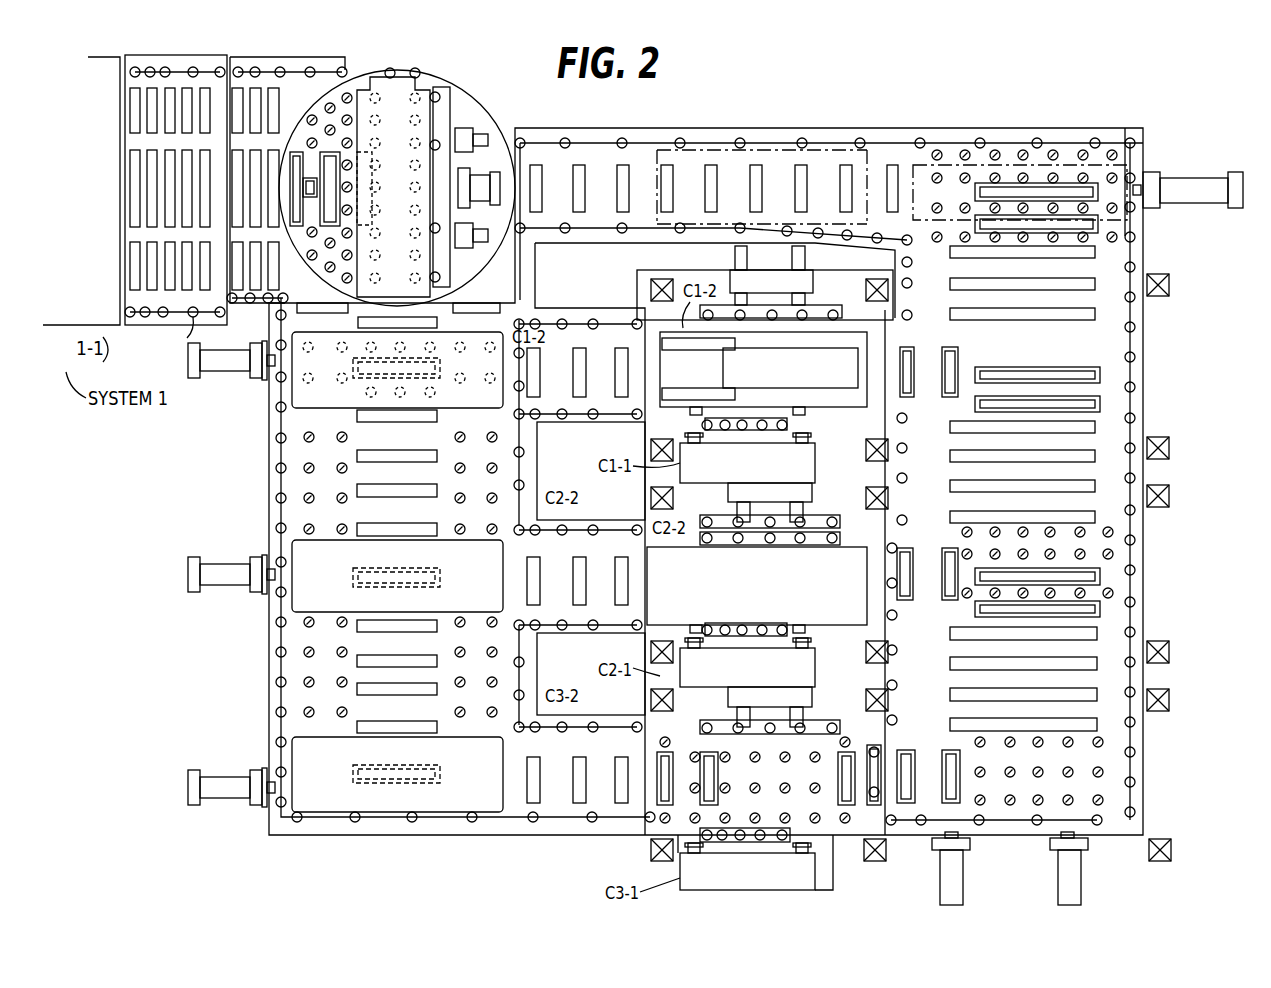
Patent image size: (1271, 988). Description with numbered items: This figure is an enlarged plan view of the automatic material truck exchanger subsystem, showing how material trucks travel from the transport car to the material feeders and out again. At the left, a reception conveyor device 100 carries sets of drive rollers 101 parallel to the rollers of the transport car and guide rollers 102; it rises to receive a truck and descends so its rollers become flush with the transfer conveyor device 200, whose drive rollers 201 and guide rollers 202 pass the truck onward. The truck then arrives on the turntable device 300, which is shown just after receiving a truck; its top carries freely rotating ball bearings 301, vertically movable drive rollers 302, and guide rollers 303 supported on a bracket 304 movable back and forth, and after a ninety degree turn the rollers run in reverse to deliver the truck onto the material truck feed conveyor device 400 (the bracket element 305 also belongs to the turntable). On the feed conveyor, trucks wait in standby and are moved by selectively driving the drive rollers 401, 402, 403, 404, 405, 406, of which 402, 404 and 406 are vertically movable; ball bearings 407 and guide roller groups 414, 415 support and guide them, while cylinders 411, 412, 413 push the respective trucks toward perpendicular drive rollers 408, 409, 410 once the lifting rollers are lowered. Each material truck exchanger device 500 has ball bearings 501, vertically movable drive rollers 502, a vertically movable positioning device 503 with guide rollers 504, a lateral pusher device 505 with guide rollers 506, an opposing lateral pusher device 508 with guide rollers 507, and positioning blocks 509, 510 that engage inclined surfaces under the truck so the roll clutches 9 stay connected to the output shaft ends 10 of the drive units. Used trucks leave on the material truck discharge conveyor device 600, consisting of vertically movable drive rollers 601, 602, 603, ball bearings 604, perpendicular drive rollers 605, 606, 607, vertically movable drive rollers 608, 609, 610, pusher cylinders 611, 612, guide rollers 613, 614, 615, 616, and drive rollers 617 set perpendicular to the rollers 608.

The reception conveyor device 100 is at (137, 328).
The drive rollers 101 is at (130, 165).
The guide rollers 102 is at (171, 337).
The transfer conveyor device 200 is at (330, 76).
The drive rollers 201 is at (290, 190).
The guide rollers 202 is at (258, 302).
The turntable device 300 is at (478, 97).
The ball bearings 301 is at (330, 255).
The drive rollers 302 is at (323, 192).
The guide rollers 303 is at (460, 128).
The bracket 304 is at (466, 168).
The connector 305 is at (488, 236).
The material truck feed conveyor device 400 is at (290, 517).
The drive rollers 401 is at (418, 307).
The drive rollers 402 is at (440, 365).
The drive rollers 403 is at (378, 418).
The drive rollers 404 is at (420, 568).
The drive rollers 405 is at (410, 723).
The drive rollers 406 is at (420, 768).
The ball bearings 407 is at (288, 436).
The drive rollers 408 is at (549, 372).
The drive rollers 409 is at (549, 581).
The drive rollers 410 is at (540, 790).
The cylinder 411 is at (215, 378).
The cylinder 412 is at (225, 592).
The cylinder 413 is at (238, 805).
The guide roller group 414 is at (275, 622).
The guide roller group 415 is at (593, 625).
The material truck exchanger device 500 is at (680, 723).
The ball bearings 501 is at (787, 790).
The drive rollers 502 is at (705, 780).
The positioning device 503 is at (883, 833).
The guide rollers 504 is at (876, 752).
The lateral pusher device 505 is at (772, 842).
The guide rollers 506 is at (742, 876).
The guide rollers 507 is at (740, 720).
The lateral pusher device 508 is at (820, 722).
The positioning block 509 is at (652, 830).
The positioning block 510 is at (850, 838).
The material truck discharge conveyor device 600 is at (1117, 465).
The drive rollers 601 is at (977, 345).
The drive rollers 602 is at (895, 552).
The drive rollers 603 is at (917, 773).
The ball bearings 604 is at (940, 241).
The drive rollers 605 is at (1098, 284).
The drive rollers 606 is at (1097, 458).
The drive rollers 607 is at (967, 723).
The drive rollers 608 is at (1063, 182).
The drive rollers 609 is at (1033, 397).
The drive rollers 610 is at (1098, 578).
The pusher cylinder 611 is at (963, 890).
The pusher cylinder 612 is at (1178, 178).
The guide rollers 613 is at (895, 628).
The guide rollers 614 is at (1150, 270).
The guide rollers 615 is at (920, 128).
The guide rollers 616 is at (740, 218).
The drive rollers 617 is at (537, 182).
The clutch 9 is at (707, 408).
The output shaft end 10 is at (785, 853).